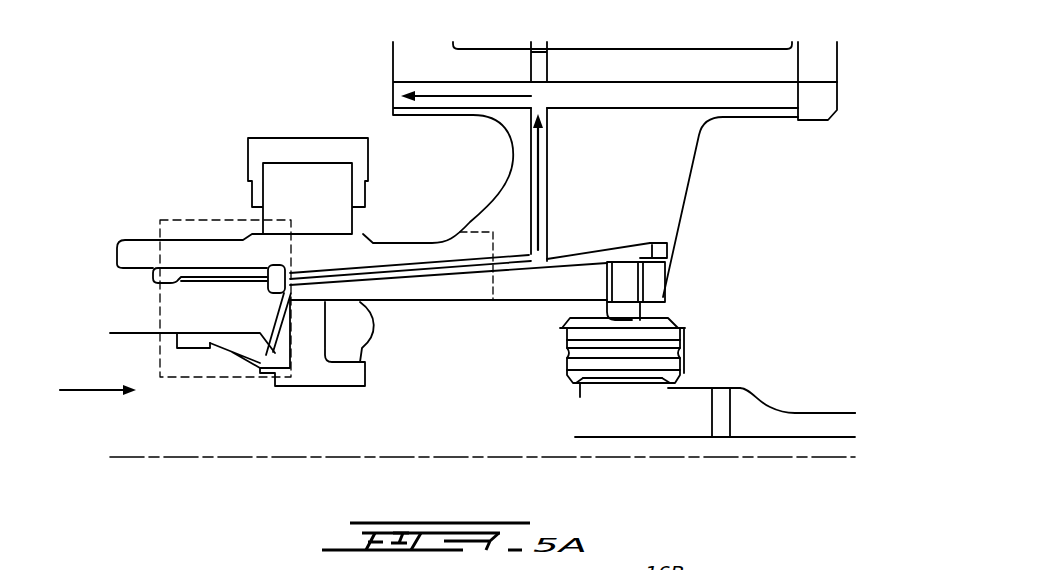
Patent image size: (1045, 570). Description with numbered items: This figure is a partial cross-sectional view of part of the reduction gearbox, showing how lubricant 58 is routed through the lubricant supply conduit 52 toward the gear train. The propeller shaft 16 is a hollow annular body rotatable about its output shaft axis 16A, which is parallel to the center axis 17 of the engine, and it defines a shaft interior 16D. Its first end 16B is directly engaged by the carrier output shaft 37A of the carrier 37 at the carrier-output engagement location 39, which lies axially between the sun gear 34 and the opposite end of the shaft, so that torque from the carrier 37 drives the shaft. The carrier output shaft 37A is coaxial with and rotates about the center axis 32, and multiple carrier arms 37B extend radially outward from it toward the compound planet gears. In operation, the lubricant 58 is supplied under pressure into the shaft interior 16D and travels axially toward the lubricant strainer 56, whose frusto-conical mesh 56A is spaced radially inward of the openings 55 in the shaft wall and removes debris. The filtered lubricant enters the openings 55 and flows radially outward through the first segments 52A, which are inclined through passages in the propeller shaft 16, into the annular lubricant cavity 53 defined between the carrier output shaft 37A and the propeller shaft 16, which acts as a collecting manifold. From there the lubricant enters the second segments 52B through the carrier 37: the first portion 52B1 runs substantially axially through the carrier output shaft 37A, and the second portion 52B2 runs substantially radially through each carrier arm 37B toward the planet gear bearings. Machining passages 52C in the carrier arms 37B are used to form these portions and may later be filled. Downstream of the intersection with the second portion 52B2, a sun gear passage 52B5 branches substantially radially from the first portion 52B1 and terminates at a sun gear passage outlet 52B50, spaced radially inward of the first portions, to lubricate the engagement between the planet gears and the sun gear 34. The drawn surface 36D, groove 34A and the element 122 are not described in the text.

The lubricant 58 is at (448, 96).
The annular lubricant cavity 53 is at (275, 265).
The lubricant supply conduit 52 is at (351, 236).
The first portion of the second segment 52B1 is at (340, 273).
The carrier 37 is at (484, 169).
The carrier-output engagement location 39 is at (176, 217).
The propeller shaft 16 is at (148, 310).
The first segment 52A is at (270, 353).
The carrier output shaft 37A is at (125, 242).
The carrier arm 37B is at (517, 193).
The second segment 52B is at (511, 242).
The second portion of the second segment 52B2 is at (546, 178).
The machining passage 52C is at (598, 245).
The platform surface 36D is at (674, 317).
The sun gear 34 is at (698, 352).
The root groove 34A is at (669, 367).
The platform 122 is at (828, 412).
The sun gear passage 52B5 is at (639, 269).
The first end of the propeller shaft 16B is at (383, 368).
The sun gear passage outlet 52B50 is at (607, 308).
The opening 55 is at (243, 341).
The shaft interior 16D is at (143, 376).
The lubricant strainer 56 is at (215, 366).
The mesh 56A is at (242, 365).
The output shaft axis 16A is at (293, 458).
The center axis 17 is at (850, 448).
The center axis 32 is at (800, 461).